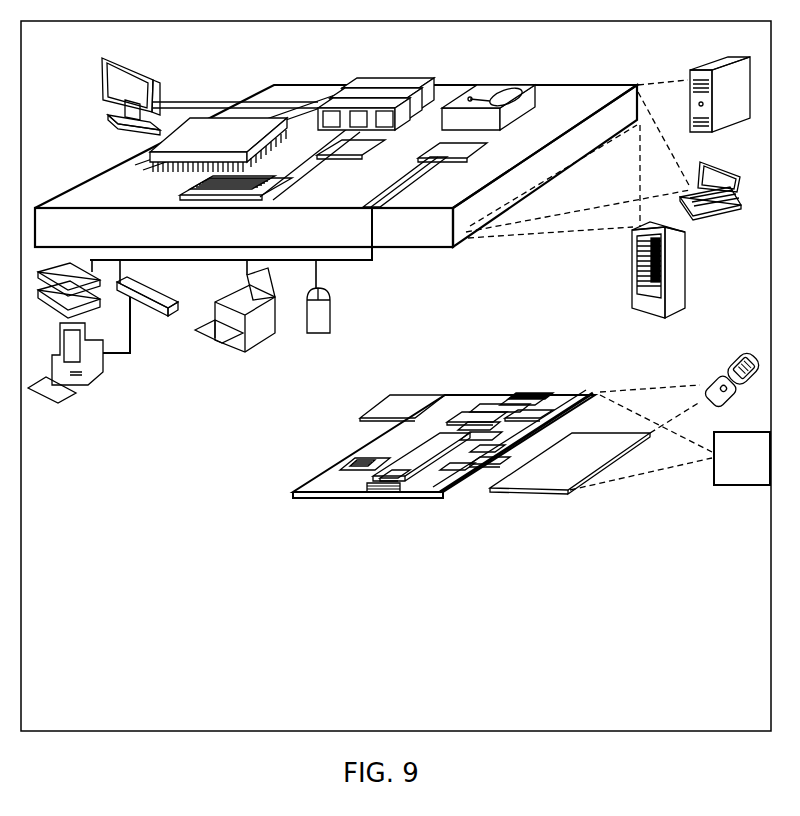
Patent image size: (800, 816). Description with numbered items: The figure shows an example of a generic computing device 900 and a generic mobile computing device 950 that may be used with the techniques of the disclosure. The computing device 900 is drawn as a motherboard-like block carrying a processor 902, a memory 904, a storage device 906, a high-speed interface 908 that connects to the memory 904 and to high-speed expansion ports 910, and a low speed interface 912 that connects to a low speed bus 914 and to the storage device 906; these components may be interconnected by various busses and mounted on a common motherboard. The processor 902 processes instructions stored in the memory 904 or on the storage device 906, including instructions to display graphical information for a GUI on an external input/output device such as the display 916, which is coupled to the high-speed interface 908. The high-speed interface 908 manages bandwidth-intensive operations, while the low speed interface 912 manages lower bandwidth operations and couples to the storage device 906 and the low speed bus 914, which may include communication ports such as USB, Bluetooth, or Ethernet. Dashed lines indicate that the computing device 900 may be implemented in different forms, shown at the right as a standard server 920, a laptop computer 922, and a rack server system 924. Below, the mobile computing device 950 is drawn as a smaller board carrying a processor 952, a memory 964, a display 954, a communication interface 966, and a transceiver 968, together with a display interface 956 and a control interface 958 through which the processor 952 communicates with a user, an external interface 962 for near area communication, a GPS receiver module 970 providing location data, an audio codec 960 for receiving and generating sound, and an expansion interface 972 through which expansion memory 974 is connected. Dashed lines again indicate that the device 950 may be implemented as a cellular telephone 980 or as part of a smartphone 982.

The computing device 900 is at (228, 66).
The processor 902 is at (152, 163).
The memory 904 is at (356, 82).
The storage device 906 is at (503, 76).
The high-speed interface 908 is at (326, 148).
The high-speed expansion ports 910 is at (197, 187).
The low speed interface 912 is at (450, 147).
The low speed bus 914 is at (385, 212).
The display 916 is at (102, 58).
The standard server 920 is at (688, 75).
The laptop computer 922 is at (706, 163).
The rack server system 924 is at (631, 281).
The mobile computing device 950 is at (428, 375).
The processor 952 is at (407, 497).
The display 954 is at (505, 490).
The display interface 956 is at (450, 497).
The control interface 958 is at (477, 480).
The audio codec 960 is at (490, 487).
The external interface 962 is at (380, 497).
The memory 964 is at (347, 467).
The communication interface 966 is at (472, 417).
The transceiver 968 is at (520, 417).
The GPS receiver module 970 is at (493, 407).
The expansion interface 972 is at (430, 398).
The expansion memory 974 is at (383, 400).
The cellular telephone 980 is at (740, 353).
The smartphone 982 is at (722, 438).